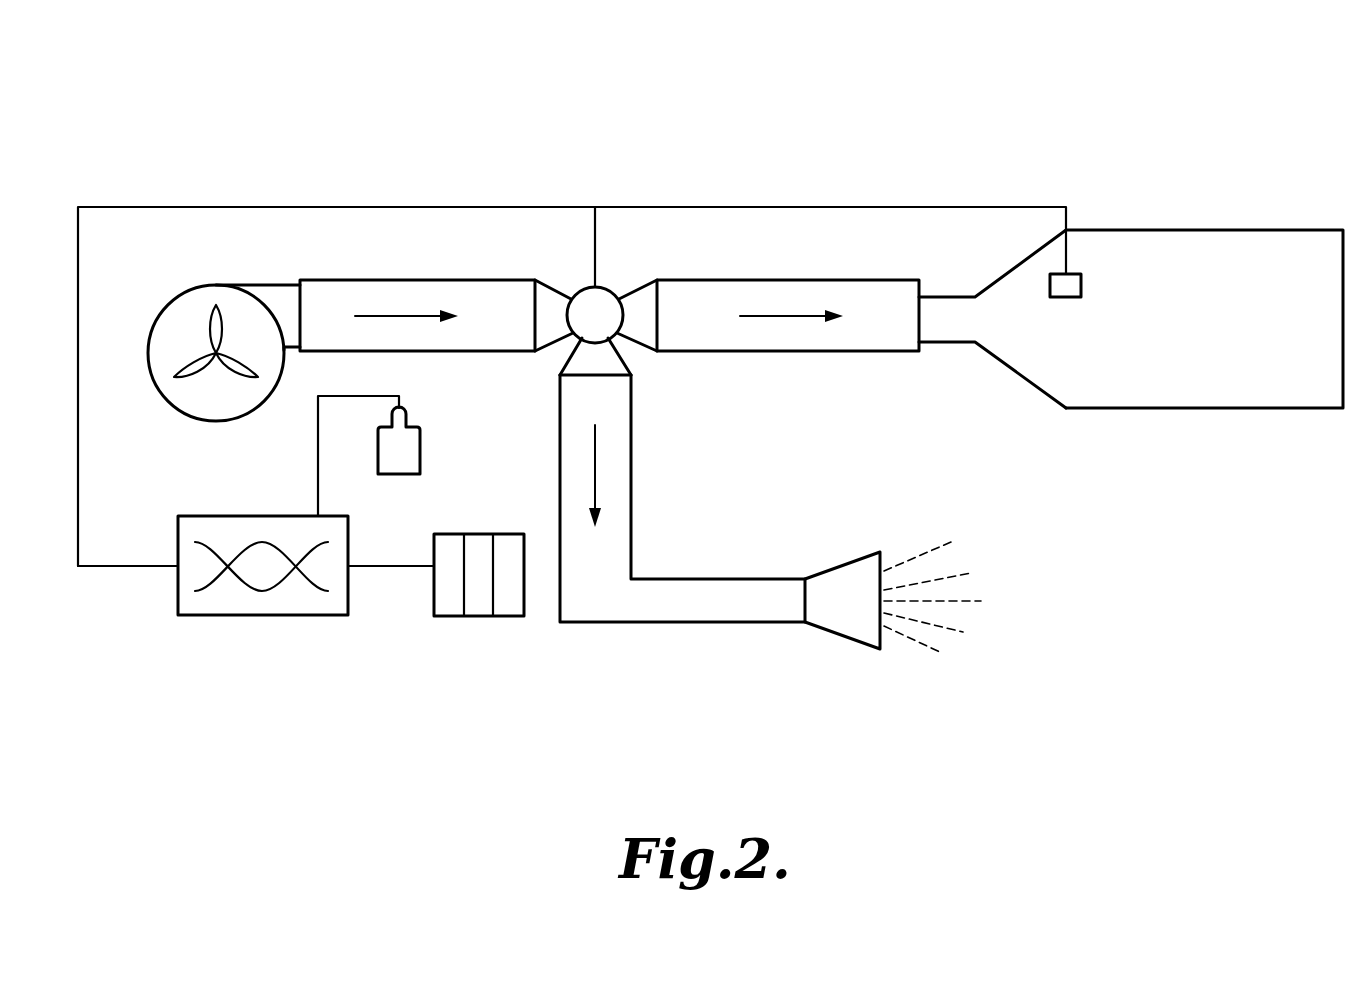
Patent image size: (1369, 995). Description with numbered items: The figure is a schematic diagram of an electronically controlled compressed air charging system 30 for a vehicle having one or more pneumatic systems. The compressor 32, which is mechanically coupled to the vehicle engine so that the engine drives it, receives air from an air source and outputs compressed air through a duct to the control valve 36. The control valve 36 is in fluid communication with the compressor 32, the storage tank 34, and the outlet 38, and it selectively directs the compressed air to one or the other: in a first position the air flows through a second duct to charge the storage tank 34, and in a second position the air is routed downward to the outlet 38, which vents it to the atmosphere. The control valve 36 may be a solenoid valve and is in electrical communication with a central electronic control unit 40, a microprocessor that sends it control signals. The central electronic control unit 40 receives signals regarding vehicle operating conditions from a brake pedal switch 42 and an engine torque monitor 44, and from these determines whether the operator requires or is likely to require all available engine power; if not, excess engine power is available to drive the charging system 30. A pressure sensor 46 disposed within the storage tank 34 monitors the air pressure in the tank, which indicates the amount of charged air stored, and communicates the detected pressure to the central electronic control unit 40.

The compressed air charging system 30 is at (230, 120).
The compressor 32 is at (185, 297).
The storage tank 34 is at (1223, 230).
The control valve 36 is at (606, 289).
The outlet 38 is at (850, 566).
The central electronic control unit 40 is at (228, 614).
The brake pedal switch 42 is at (415, 447).
The engine torque monitor 44 is at (470, 617).
The pressure sensor 46 is at (1081, 284).